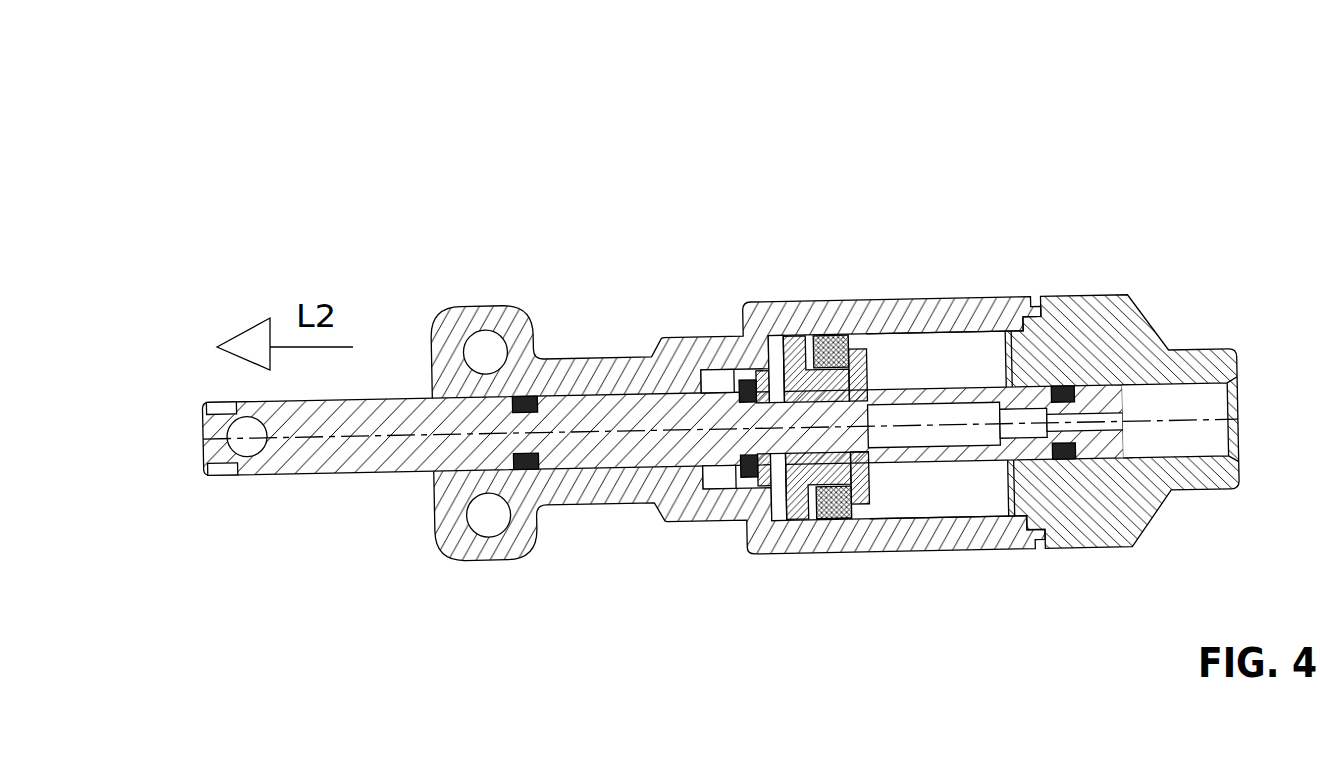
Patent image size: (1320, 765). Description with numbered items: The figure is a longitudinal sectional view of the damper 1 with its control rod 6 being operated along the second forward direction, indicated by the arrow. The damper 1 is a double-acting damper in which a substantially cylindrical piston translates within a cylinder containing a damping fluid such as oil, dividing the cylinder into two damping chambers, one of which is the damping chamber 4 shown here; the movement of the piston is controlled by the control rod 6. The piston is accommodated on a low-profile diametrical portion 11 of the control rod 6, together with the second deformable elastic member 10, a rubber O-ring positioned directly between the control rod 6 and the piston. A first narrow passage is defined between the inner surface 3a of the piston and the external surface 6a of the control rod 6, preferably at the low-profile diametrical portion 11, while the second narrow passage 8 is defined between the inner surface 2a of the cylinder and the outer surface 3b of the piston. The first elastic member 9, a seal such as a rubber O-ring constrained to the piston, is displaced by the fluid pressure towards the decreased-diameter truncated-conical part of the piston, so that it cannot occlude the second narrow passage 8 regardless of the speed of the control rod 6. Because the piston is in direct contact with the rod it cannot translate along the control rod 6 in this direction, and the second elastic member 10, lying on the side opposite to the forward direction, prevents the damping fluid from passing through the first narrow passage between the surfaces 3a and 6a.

The damper 1 is at (680, 412).
The inner surface of the cylinder 2a is at (855, 385).
The inner surface of the piston 3a is at (850, 378).
The outer surface of the piston 3b is at (792, 365).
The damping chamber 4 is at (984, 372).
The control rod 6 is at (378, 476).
The external surface of the control rod 6a is at (797, 453).
The second narrow passage 8 is at (843, 521).
The first elastic member 9 is at (843, 524).
The second deformable elastic member 10 is at (739, 380).
The low-profile diametrical portion 11 is at (860, 461).